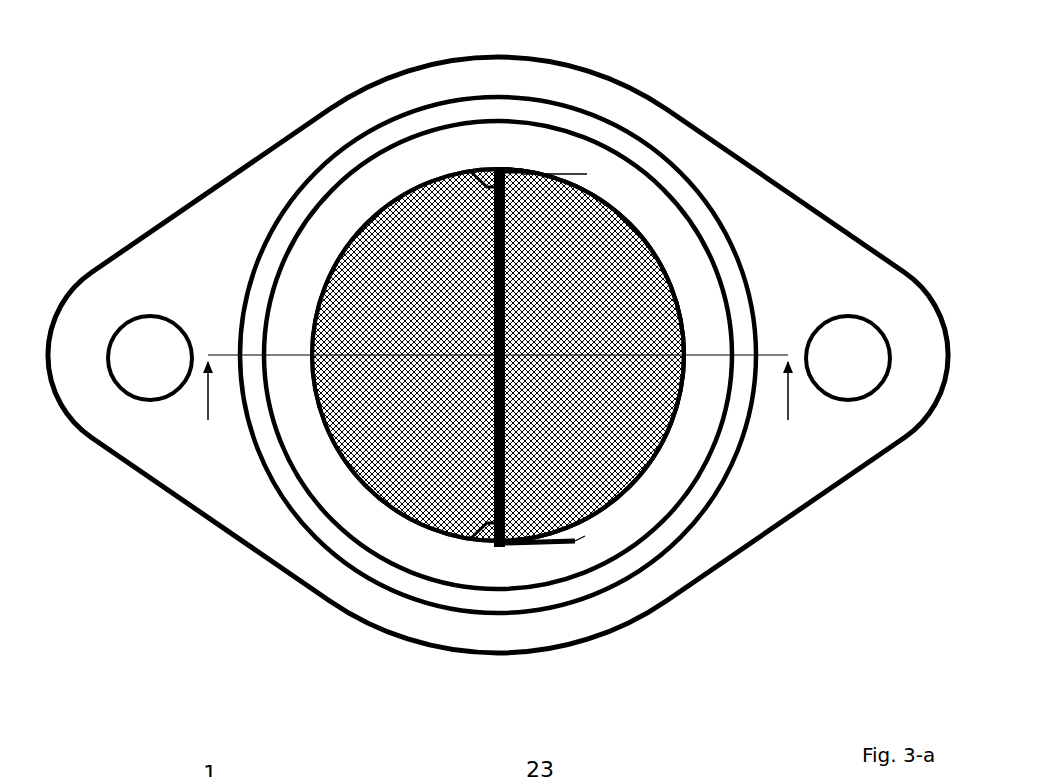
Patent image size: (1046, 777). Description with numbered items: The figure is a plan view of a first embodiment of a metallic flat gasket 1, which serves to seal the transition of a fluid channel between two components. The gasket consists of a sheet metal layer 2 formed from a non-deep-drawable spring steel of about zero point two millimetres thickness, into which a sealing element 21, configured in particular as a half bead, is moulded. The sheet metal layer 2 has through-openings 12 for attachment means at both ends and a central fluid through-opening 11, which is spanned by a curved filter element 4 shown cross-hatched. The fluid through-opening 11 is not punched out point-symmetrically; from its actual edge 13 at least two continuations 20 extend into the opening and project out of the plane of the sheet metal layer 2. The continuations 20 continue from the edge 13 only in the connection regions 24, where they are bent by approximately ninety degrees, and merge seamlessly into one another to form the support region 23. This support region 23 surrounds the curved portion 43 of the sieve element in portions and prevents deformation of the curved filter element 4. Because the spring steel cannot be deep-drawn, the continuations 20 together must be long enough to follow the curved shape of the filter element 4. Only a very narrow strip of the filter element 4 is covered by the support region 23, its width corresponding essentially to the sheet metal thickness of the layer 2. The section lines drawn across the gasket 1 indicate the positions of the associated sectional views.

The metallic flat gasket 1 is at (250, 115).
The sheet metal layer 2 is at (498, 355).
The filter element 4 is at (412, 192).
The fluid through-opening 11 is at (672, 437).
The through-openings for attachment means 12 is at (499, 358).
The edge of the through-opening 13 is at (680, 303).
The continuations 20 is at (603, 202).
The sealing element 21 is at (747, 438).
The support region 23 is at (388, 518).
The connection regions 24 is at (486, 178).
The curved portion of the sieve element 43 is at (650, 247).